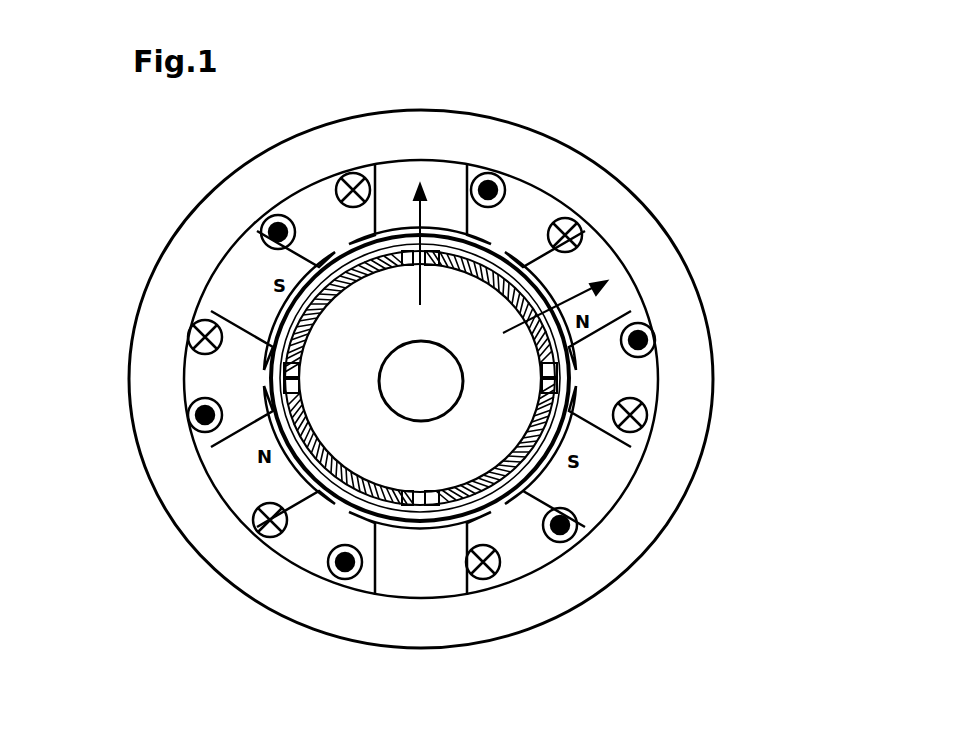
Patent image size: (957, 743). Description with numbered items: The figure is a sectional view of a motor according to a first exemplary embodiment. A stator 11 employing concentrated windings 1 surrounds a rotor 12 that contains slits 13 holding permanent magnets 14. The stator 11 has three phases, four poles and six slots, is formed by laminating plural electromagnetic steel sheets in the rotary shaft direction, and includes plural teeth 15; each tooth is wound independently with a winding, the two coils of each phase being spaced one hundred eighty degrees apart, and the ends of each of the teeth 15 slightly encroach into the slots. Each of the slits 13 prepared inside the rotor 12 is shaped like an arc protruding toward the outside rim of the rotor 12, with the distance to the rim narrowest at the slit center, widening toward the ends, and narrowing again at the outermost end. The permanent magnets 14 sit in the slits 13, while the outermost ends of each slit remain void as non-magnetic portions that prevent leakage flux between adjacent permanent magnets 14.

The concentrated windings 1 is at (186, 346).
The stator 11 is at (594, 183).
The rotor 12 is at (322, 428).
The slits 13 is at (424, 497).
The permanent magnets 14 is at (535, 460).
The teeth 15 is at (603, 325).